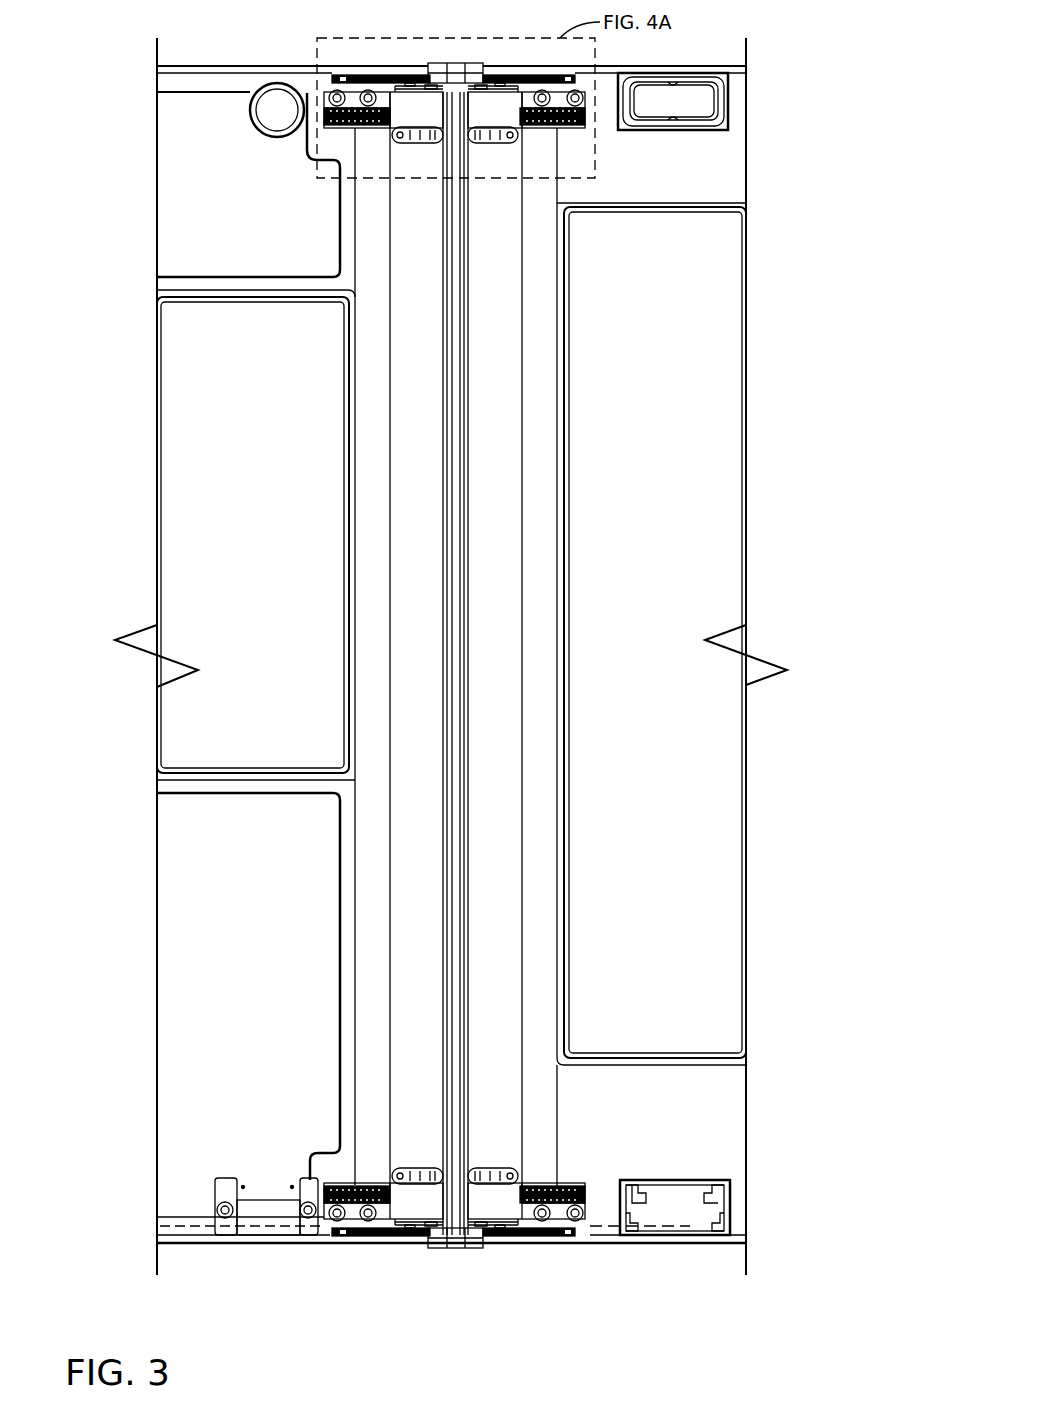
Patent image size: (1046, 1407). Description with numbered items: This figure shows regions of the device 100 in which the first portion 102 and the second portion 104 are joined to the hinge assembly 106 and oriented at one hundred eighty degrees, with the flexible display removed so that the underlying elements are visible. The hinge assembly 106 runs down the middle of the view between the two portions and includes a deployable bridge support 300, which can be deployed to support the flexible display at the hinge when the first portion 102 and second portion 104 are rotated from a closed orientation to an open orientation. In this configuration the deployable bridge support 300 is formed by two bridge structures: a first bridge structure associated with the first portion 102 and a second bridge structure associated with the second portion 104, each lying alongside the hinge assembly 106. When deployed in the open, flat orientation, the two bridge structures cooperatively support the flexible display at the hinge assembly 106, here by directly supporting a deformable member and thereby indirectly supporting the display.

The device 100 is at (660, 1320).
The first portion 102 is at (157, 222).
The second portion 104 is at (746, 301).
The hinge assembly 106 is at (437, 48).
The deployable bridge support 300 is at (333, 512).